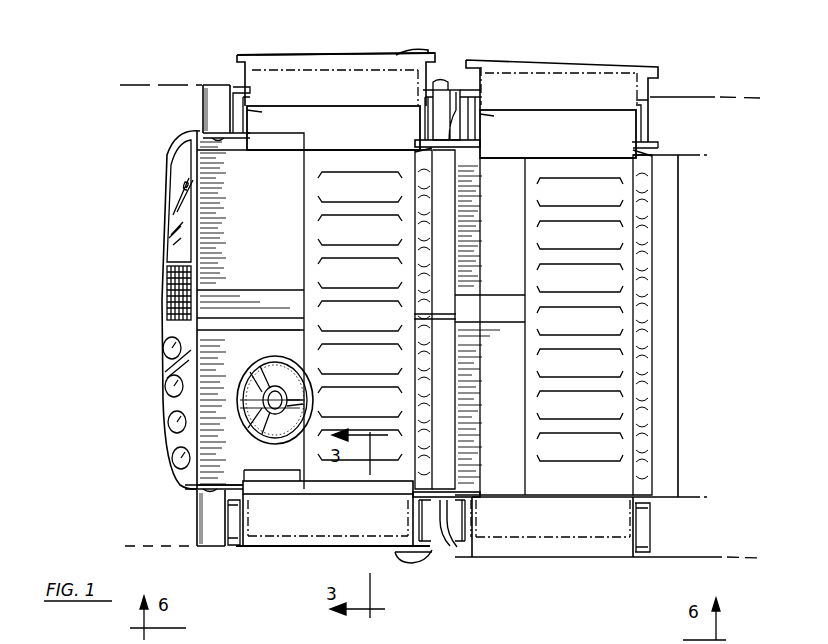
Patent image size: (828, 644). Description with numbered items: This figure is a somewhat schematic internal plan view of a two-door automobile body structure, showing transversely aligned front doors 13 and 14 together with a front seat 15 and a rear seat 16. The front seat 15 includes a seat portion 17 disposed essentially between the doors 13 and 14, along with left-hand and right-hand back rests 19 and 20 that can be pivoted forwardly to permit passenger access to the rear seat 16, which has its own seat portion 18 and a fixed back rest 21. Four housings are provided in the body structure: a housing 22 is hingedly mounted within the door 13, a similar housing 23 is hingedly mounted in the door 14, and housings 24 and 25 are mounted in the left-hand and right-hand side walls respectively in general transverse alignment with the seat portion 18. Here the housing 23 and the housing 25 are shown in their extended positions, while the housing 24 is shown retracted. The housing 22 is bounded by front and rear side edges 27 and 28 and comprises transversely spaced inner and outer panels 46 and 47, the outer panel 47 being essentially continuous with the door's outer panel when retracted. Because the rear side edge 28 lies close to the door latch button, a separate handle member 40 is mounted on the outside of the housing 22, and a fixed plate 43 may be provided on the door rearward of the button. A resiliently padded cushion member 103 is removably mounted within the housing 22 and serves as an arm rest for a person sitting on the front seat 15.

The front door 13 is at (210, 552).
The front door 14 is at (216, 84).
The front seat 15 is at (300, 243).
The rear seat 16 is at (526, 261).
The seat portion 17 is at (360, 316).
The seat portion 18 is at (580, 319).
The left-hand back rest 19 is at (418, 352).
The right-hand back rest 20 is at (418, 272).
The fixed back rest 21 is at (666, 305).
The housing 22 is at (258, 552).
The housing 23 is at (266, 54).
The housing 24 is at (548, 556).
The housing 25 is at (569, 60).
The front side edge 27 is at (232, 508).
The rear side edge 28 is at (445, 553).
The handle member 40 is at (412, 49).
The fixed plate 43 is at (447, 79).
The inner panel 46 is at (322, 108).
The outer panel 47 is at (320, 55).
The cushion member 103 is at (279, 150).